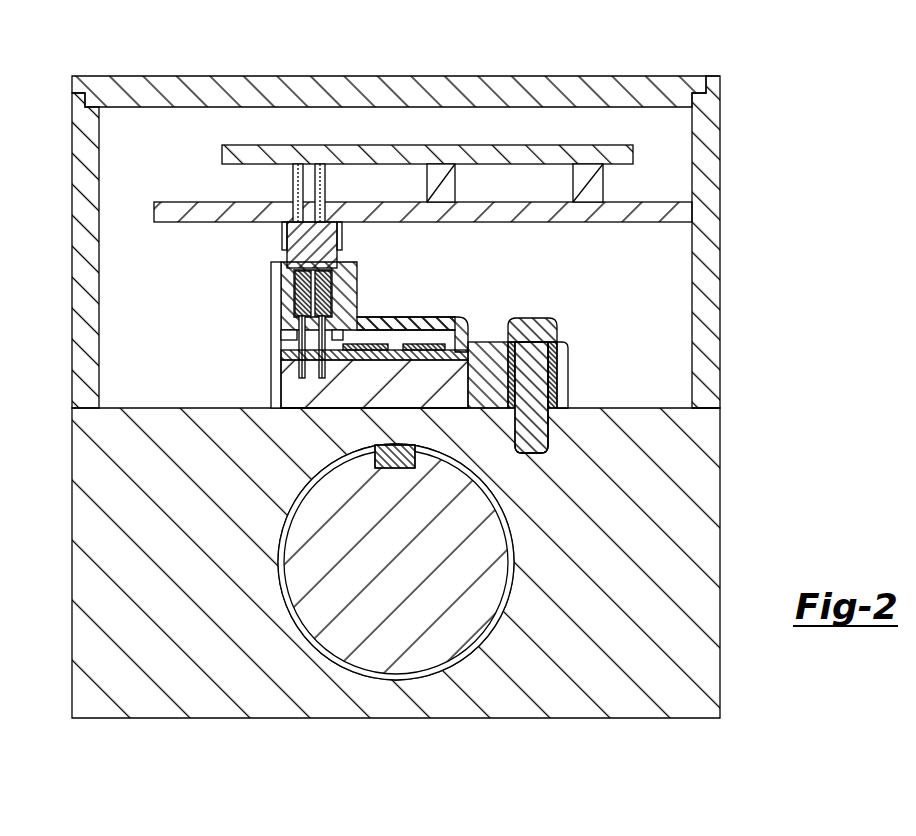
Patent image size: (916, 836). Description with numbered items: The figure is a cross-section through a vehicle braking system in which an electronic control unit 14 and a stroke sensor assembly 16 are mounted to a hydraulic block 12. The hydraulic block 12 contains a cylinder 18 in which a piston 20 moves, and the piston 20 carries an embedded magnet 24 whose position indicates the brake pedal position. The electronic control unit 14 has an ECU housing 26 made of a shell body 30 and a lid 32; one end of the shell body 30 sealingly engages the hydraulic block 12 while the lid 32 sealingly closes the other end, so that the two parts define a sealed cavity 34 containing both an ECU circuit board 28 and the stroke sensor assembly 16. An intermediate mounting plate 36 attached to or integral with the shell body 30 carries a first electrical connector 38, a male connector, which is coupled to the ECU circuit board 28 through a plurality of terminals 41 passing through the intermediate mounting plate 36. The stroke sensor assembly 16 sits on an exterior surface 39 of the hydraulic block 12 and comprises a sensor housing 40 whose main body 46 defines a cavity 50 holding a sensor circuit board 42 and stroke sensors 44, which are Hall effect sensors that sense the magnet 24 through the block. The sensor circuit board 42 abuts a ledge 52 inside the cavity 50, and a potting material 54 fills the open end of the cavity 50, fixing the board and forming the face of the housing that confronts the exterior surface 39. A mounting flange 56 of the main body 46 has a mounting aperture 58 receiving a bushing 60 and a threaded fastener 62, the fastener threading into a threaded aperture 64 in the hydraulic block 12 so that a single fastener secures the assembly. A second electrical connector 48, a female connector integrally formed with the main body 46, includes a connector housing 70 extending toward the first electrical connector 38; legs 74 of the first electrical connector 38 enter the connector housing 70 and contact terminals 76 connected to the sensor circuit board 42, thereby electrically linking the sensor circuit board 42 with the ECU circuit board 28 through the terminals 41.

The hydraulic block 12 is at (723, 500).
The electronic control unit 14 is at (735, 157).
The stroke sensor assembly 16 is at (572, 377).
The cylinder 18 is at (487, 593).
The piston 20 is at (416, 652).
The magnet 24 is at (385, 468).
The ECU housing 26 is at (714, 76).
The ECU circuit board 28 is at (436, 155).
The shell body 30 is at (720, 252).
The lid 32 is at (485, 88).
The cavity 34 is at (147, 128).
The intermediate mounting plate 36 is at (623, 222).
The first electrical connector 38 is at (328, 240).
The exterior surface 39 is at (675, 405).
The sensor housing 40 is at (268, 390).
The terminals 41 is at (293, 195).
The sensor circuit board 42 is at (438, 360).
The stroke sensors 44 is at (422, 344).
The main body 46 is at (485, 340).
The second electrical connector 48 is at (268, 257).
The cavity 50 is at (447, 316).
The ledge 52 is at (280, 356).
The potting material 54 is at (293, 400).
The mounting flange 56 is at (563, 397).
The mounting aperture 58 is at (548, 400).
The bushing 60 is at (552, 351).
The threaded fastener 62 is at (548, 318).
The threaded aperture 64 is at (530, 448).
The connector housing 70 is at (288, 290).
The legs 74 is at (333, 290).
The terminals 76 is at (280, 340).